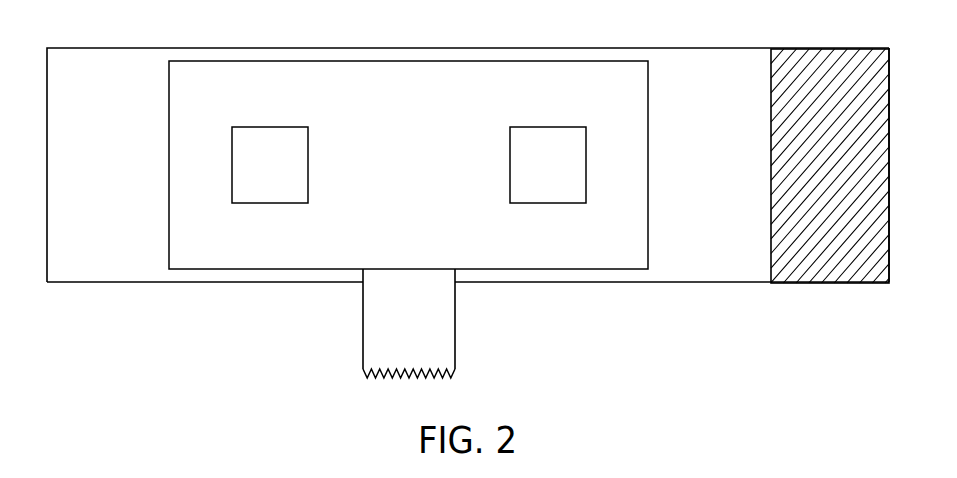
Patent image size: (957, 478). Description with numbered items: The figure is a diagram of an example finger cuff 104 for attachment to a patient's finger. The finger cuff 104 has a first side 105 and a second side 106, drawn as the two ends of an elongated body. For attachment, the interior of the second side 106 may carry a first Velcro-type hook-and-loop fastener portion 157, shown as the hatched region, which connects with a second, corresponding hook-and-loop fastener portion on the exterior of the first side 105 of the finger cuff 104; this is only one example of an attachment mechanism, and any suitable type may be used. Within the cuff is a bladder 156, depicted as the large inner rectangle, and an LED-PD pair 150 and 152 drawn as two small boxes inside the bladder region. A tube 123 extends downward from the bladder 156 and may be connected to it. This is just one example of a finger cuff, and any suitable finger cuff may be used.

The finger cuff 104 is at (195, 283).
The first side 105 is at (98, 48).
The second side 106 is at (662, 48).
The tube 123 is at (455, 318).
The LED of LED-PD pair 150 is at (291, 177).
The PD of LED-PD pair 152 is at (568, 177).
The bladder 156 is at (328, 61).
The first Velcro-type hook-and-loop fastener portion 157 is at (812, 48).